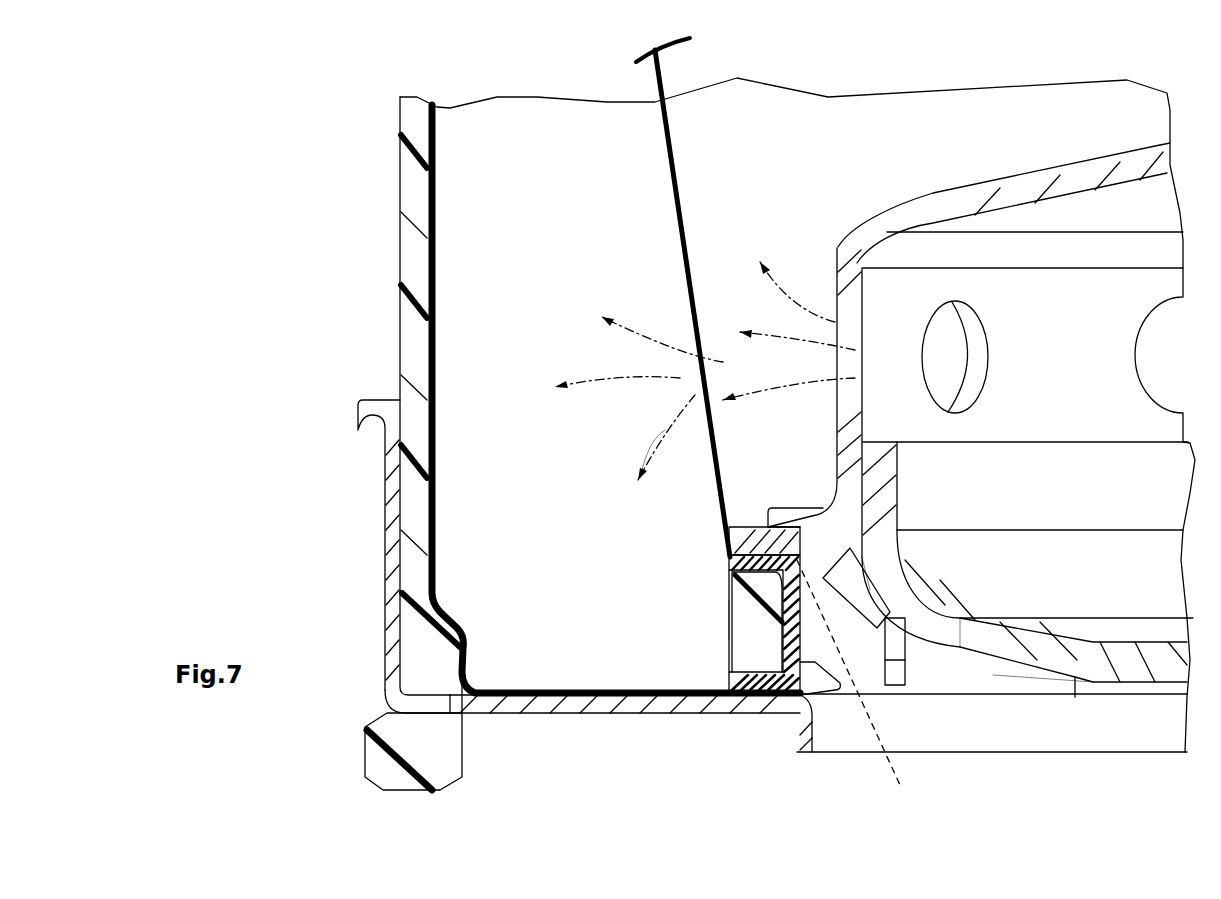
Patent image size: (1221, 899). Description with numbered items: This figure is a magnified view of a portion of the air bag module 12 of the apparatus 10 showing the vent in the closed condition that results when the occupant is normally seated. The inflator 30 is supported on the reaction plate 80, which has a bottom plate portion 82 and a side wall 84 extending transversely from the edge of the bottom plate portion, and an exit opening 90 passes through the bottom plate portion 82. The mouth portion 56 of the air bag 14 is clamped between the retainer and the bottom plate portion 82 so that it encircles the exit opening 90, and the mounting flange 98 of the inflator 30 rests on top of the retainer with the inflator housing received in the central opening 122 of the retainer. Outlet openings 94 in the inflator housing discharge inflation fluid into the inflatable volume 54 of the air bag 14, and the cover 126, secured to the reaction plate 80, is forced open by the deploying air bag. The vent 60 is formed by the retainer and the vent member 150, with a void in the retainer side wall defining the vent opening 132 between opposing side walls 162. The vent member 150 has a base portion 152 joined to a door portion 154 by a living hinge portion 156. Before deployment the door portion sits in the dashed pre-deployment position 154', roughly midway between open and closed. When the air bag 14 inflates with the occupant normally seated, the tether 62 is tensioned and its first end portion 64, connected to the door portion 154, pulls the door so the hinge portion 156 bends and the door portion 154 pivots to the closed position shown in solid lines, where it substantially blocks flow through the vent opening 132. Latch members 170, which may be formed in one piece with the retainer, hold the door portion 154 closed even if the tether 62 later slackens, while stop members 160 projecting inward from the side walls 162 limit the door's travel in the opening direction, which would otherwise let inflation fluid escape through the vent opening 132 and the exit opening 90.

The apparatus 10 is at (510, 130).
The air bag module 12 is at (597, 125).
The air bag 14 is at (440, 607).
The inflator 30 is at (1003, 185).
The inflatable volume 54 is at (787, 141).
The mouth portion 56 is at (635, 693).
The vent 60 is at (722, 600).
The tether 62 is at (690, 222).
The first end portion 64 is at (727, 645).
The reaction plate 80 is at (390, 497).
The bottom plate portion 82 is at (540, 710).
The side wall 84 is at (390, 540).
The exit opening 90 is at (922, 728).
The outlet openings 94 is at (1135, 357).
The mounting flange 98 is at (762, 540).
The central opening 122 is at (960, 693).
The cover 126 is at (422, 436).
The vent opening 132 is at (660, 600).
The vent member 150 is at (800, 633).
The base portion 152 is at (736, 550).
The door portion 154 is at (922, 586).
The pre-deployment position of door portion 154' is at (866, 689).
The hinge portion 156 is at (780, 570).
The stop members 160 is at (897, 670).
The side walls 162 is at (992, 675).
The latch members 170 is at (822, 697).